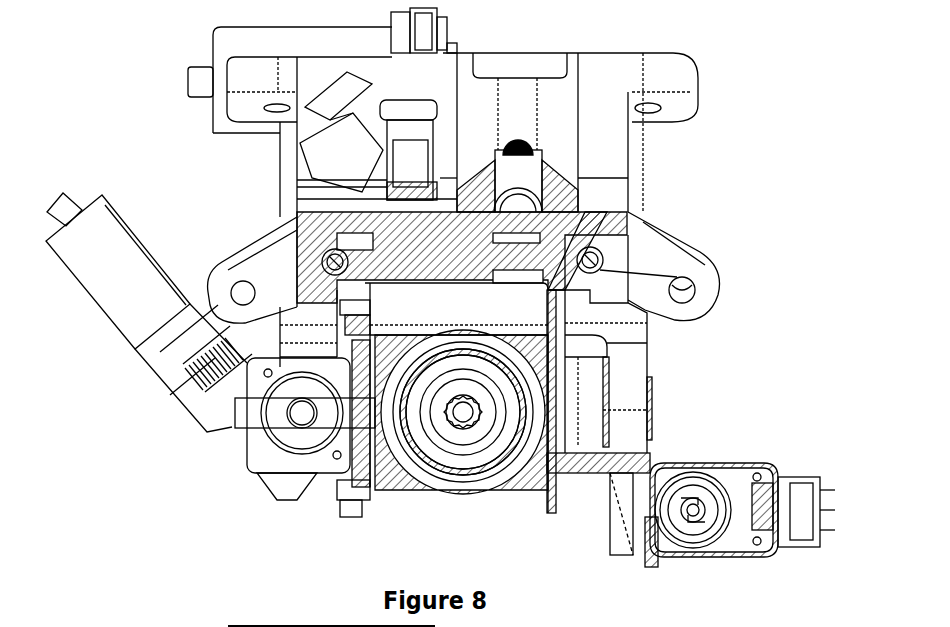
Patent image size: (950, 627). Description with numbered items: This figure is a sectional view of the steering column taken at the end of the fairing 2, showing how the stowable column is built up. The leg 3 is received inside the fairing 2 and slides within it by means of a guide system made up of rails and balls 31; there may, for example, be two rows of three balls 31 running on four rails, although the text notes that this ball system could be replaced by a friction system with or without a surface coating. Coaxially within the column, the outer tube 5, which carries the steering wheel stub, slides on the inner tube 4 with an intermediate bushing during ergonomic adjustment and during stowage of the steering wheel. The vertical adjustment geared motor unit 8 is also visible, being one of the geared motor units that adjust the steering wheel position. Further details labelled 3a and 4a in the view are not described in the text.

The fairing 2 is at (78, 272).
The leg 3 is at (628, 213).
The fastening bolt 3a is at (620, 243).
The balls 31 is at (690, 278).
The inner tube 4 is at (420, 473).
The bearing housing 4a is at (483, 490).
The outer tube 5 is at (533, 462).
The vertical adjustment geared motor unit 8 is at (740, 463).